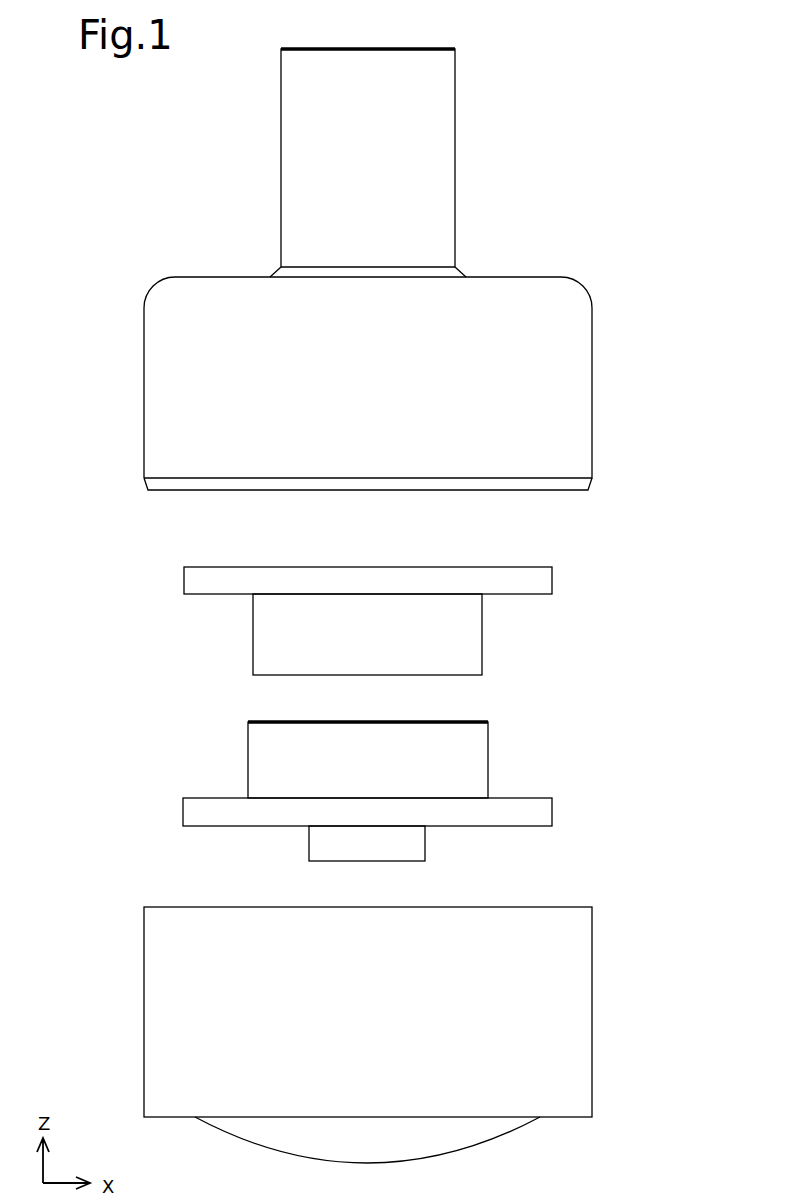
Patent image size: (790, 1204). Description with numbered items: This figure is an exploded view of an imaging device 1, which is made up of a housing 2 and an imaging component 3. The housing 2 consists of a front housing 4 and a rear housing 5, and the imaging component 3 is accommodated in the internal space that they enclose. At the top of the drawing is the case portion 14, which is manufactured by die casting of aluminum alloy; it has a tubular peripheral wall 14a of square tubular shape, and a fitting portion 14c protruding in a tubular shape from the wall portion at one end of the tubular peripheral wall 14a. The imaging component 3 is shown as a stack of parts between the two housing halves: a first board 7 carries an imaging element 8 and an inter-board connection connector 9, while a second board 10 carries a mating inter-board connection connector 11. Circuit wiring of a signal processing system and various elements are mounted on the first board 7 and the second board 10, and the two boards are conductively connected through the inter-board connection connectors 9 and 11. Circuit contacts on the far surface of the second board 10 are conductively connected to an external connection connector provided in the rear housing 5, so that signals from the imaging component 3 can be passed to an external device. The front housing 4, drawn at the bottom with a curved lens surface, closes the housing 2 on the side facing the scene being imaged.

The imaging device 1 is at (645, 120).
The housing 2 is at (377, 720).
The imaging component 3 is at (312, 728).
The front housing 4 is at (144, 1012).
The rear housing 5 is at (144, 397).
The first board 7 is at (183, 815).
The imaging element 8 is at (309, 856).
The inter-board connection connector 9 is at (248, 750).
The second board 10 is at (184, 581).
The inter-board connection connector 11 is at (253, 632).
The case portion 14 is at (377, 606).
The tubular peripheral wall 14a is at (592, 437).
The fitting portion 14c is at (455, 187).